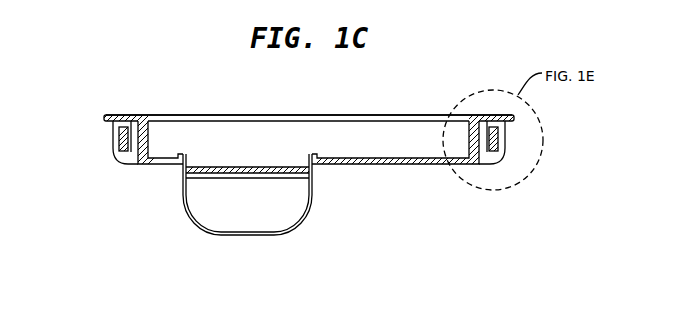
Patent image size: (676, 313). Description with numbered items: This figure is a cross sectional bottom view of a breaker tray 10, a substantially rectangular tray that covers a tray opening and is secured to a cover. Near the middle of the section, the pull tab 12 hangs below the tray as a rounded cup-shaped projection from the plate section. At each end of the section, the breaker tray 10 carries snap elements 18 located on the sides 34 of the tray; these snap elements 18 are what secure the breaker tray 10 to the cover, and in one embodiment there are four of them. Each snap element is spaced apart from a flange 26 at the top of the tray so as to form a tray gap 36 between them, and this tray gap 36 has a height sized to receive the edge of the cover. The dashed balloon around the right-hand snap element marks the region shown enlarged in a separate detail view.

The breaker tray 10 is at (106, 119).
The pull tab 12 is at (297, 224).
The snap elements 18 is at (122, 142).
The flange 26 is at (122, 116).
The sides 34 is at (125, 161).
The tray gap 36 is at (113, 127).